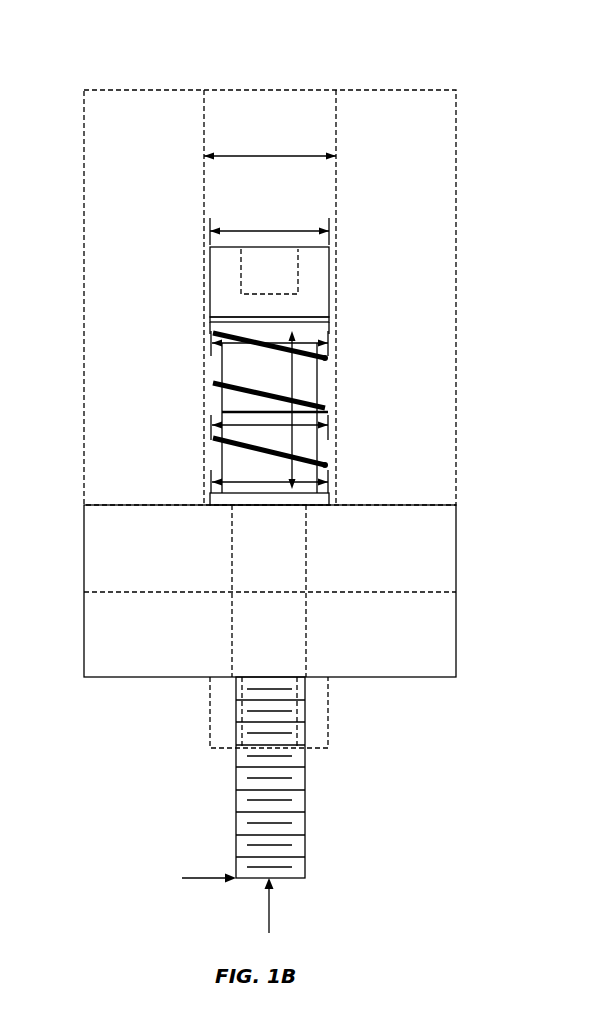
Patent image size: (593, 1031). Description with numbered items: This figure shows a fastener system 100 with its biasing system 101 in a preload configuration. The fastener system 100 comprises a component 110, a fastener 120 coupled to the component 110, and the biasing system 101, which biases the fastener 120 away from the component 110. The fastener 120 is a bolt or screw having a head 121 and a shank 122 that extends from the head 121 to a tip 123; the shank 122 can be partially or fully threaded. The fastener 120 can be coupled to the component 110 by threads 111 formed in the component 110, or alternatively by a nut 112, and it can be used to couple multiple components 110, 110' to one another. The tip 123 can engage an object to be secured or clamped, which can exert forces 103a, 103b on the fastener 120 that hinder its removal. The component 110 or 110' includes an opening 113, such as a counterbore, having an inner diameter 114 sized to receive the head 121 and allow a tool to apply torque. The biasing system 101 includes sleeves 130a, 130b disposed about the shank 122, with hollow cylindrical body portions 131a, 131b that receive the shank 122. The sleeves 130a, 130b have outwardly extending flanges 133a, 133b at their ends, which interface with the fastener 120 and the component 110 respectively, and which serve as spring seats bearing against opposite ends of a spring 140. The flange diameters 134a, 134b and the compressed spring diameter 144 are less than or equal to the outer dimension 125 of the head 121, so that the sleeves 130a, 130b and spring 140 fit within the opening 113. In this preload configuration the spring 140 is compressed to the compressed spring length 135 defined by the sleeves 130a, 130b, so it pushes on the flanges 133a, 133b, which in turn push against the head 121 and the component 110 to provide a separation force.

The fastener system 100 is at (221, 52).
The opening 113 is at (320, 95).
The inner diameter 114 is at (272, 152).
The outer dimension 125 is at (272, 228).
The head 121 is at (210, 290).
The fastener 120 is at (286, 248).
The flange 133a is at (330, 321).
The biasing system 101 is at (286, 407).
The sleeve 130a is at (206, 365).
The diameter 134a is at (326, 357).
The spring 140 is at (218, 386).
The body portion 131a is at (317, 378).
The compressed spring length 135 is at (293, 402).
The sleeve 130b is at (204, 446).
The body portion 131b is at (317, 447).
The diameter 134b is at (326, 464).
The diameter 144 is at (230, 444).
The flange 133b is at (330, 498).
The component 110' is at (235, 562).
The component 110 is at (235, 591).
The threads 111 is at (269, 778).
The nut 112 is at (328, 718).
The shank 122 is at (236, 781).
The force 103b is at (195, 878).
The force 103a is at (268, 915).
The tip 123 is at (303, 879).